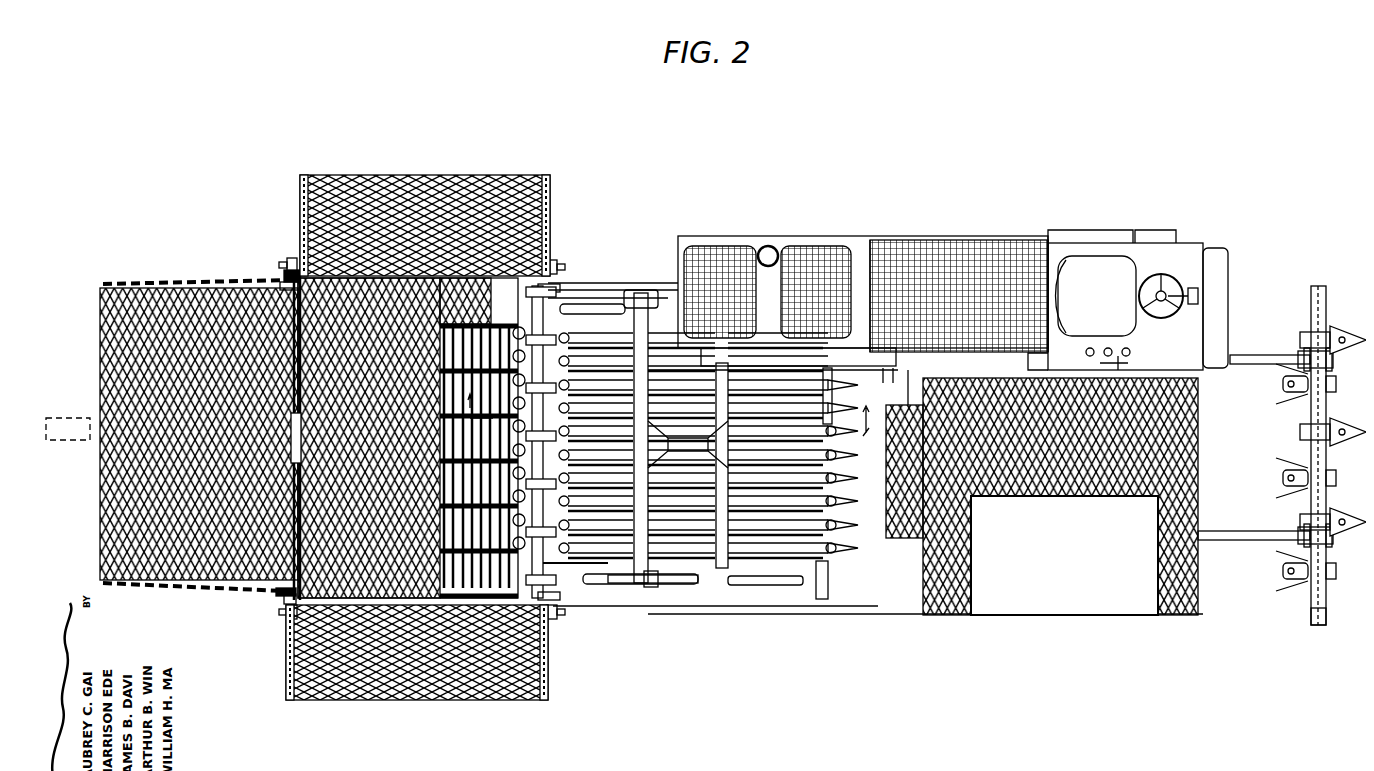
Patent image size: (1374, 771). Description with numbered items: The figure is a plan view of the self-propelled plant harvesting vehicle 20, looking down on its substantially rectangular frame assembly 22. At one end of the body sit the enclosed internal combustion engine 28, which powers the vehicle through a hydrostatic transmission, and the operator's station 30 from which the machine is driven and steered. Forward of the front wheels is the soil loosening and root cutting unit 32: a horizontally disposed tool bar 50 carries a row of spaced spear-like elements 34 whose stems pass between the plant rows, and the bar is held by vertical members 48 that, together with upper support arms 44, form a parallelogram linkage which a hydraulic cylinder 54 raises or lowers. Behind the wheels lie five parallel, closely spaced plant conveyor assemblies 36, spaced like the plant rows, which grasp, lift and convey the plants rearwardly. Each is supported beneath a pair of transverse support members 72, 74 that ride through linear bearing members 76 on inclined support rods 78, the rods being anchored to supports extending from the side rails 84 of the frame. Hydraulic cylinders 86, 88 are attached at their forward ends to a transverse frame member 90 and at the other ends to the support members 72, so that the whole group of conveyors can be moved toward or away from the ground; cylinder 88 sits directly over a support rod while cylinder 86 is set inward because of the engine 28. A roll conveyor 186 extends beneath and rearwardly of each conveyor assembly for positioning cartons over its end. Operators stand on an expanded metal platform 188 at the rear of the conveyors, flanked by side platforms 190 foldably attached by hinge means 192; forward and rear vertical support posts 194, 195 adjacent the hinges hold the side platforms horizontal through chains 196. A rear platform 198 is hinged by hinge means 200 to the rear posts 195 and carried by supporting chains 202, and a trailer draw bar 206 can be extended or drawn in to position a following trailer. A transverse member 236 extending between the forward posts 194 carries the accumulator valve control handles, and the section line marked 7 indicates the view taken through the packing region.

The section line 7- 7 is at (671, 420).
The self-propelled vehicle 20 is at (945, 230).
The frame assembly 22 is at (846, 604).
The internal combustion engine 28 is at (705, 237).
The operator's station 30 is at (1160, 268).
The soil loosening and root cutting unit 32 is at (1300, 276).
The soil loosening and root cutting elements 34 is at (1345, 395).
The plant conveyor assemblies 36 is at (842, 366).
The upper support arm 44 is at (1243, 356).
The vertical member 48 is at (1290, 345).
The tool bar 50 is at (1303, 614).
The hydraulic cylinder 54 is at (1275, 465).
The transverse support member 72 is at (672, 556).
The transverse support member 74 is at (700, 556).
The linear bearing members 76 is at (655, 290).
The inclined support rods 78 is at (615, 606).
The side rails 84 is at (628, 273).
The hydraulic cylinder 86 is at (748, 352).
The hydraulic cylinder 88 is at (738, 580).
The transverse frame member 90 is at (822, 569).
The roll conveyor 186 is at (522, 302).
The expanded metal platform 188 is at (280, 270).
The side platforms 190 is at (398, 180).
The hinge means 192 is at (283, 252).
The forward vertical support posts 194 is at (552, 280).
The rear vertical support posts 195 is at (278, 592).
The chains 196 is at (292, 205).
The rear platform 198 is at (108, 322).
The hinge means 200 is at (268, 586).
The supporting chains 202 is at (196, 273).
The trailer draw bar 206 is at (68, 416).
The transverse member 236 is at (538, 558).